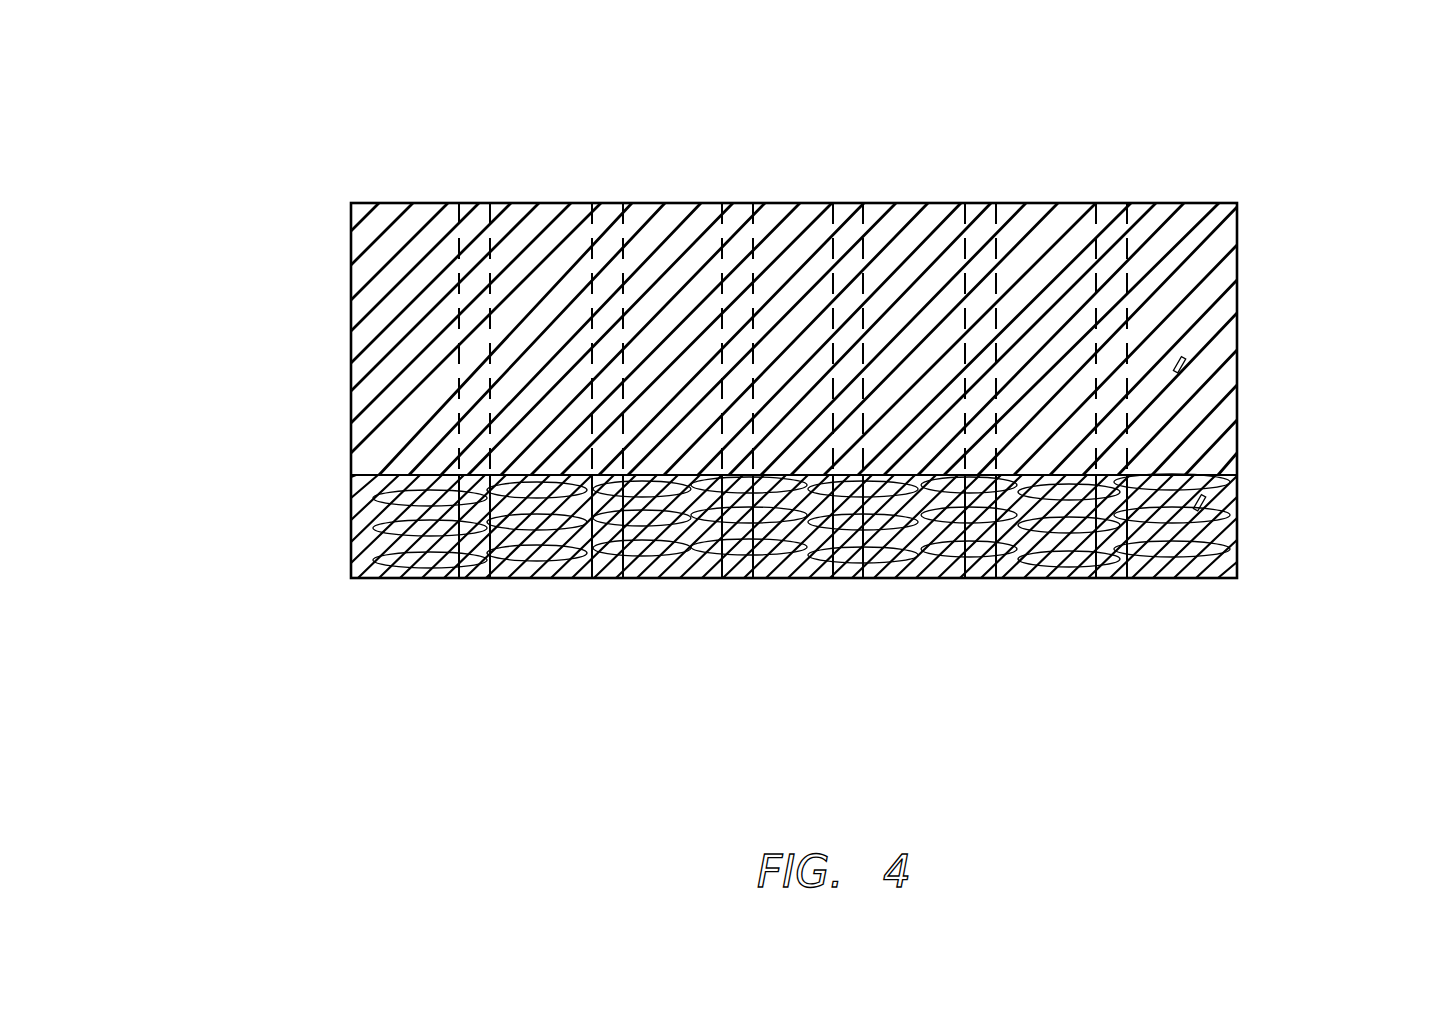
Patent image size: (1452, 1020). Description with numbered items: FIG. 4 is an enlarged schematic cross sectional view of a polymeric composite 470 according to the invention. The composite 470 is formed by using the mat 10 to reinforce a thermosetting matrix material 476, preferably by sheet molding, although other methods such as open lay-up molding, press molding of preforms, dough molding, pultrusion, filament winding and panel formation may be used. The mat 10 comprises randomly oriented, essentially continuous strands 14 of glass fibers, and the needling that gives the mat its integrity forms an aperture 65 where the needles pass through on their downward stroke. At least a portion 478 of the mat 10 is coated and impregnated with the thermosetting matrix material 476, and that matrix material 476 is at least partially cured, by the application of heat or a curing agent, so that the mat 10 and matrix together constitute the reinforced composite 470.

The mat 10 is at (350, 517).
The strands 14 is at (405, 553).
The aperture 65 is at (460, 297).
The polymeric composite 470 is at (1237, 291).
The thermosetting matrix material 476 is at (1113, 233).
The portion 478 is at (1180, 370).